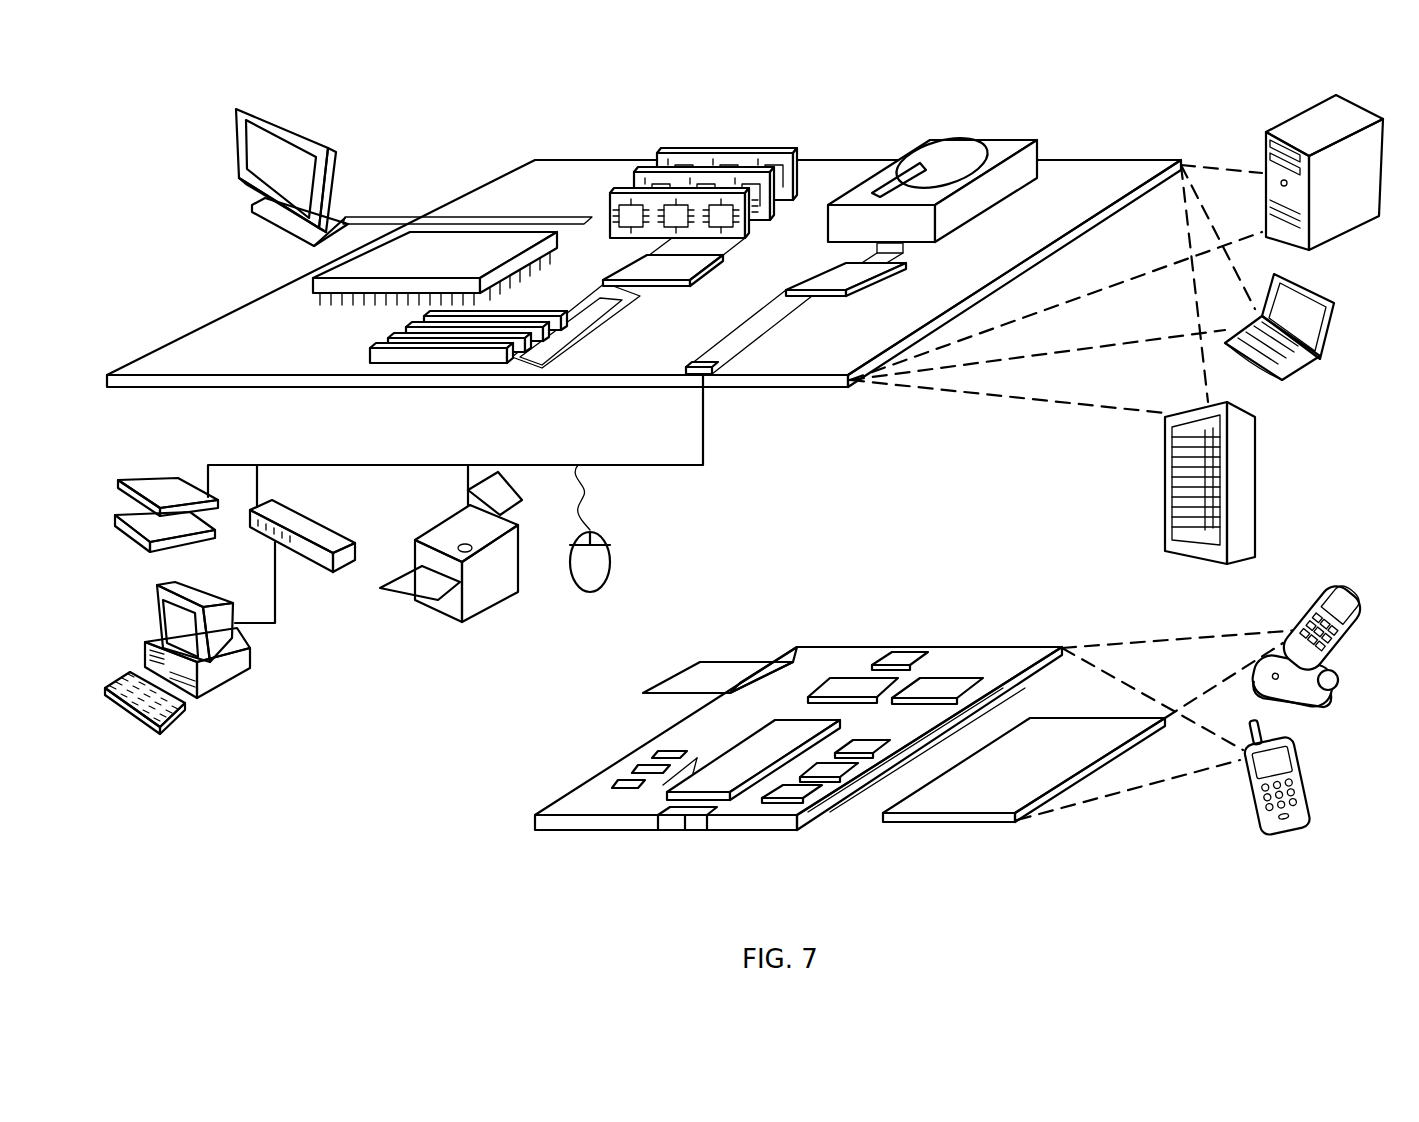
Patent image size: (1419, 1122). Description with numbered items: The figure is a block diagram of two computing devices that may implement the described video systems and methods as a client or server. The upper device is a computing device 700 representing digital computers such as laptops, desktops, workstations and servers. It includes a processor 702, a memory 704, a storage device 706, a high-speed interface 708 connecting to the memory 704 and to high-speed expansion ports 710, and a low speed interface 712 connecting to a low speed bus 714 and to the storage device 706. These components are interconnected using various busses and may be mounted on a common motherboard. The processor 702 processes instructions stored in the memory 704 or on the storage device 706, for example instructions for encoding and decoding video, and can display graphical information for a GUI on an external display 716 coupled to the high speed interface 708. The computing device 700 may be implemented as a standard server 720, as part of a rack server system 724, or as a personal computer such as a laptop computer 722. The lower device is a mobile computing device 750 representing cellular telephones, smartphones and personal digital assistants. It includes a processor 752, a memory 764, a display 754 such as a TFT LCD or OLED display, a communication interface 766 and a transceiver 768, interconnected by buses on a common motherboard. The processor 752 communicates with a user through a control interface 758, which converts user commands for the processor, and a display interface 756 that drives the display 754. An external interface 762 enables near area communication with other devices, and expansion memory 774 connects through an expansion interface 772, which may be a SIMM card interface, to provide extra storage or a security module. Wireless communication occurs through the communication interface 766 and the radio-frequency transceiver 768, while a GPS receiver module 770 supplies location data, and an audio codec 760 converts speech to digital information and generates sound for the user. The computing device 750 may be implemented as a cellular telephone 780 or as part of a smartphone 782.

The computing device 700 is at (452, 125).
The processor 702 is at (322, 280).
The memory 704 is at (668, 155).
The storage device 706 is at (930, 142).
The high-speed interface 708 is at (645, 272).
The high-speed expansion ports 710 is at (392, 347).
The low speed interface 712 is at (826, 272).
The low speed bus 714 is at (713, 373).
The display 716 is at (240, 105).
The standard server 720 is at (1268, 147).
The laptop computer 722 is at (1330, 302).
The rack server system 724 is at (1163, 470).
The computing device 750 is at (512, 824).
The processor 752 is at (722, 785).
The display 754 is at (985, 805).
The display interface 756 is at (800, 790).
The control interface 758 is at (835, 770).
The audio codec 760 is at (862, 748).
The external interface 762 is at (688, 815).
The memory 764 is at (633, 775).
The communication interface 766 is at (855, 686).
The transceiver 768 is at (940, 690).
The GPS receiver module 770 is at (905, 660).
The expansion interface 772 is at (777, 662).
The expansion memory 774 is at (703, 662).
The cellular telephone 780 is at (1312, 605).
The smartphone 782 is at (1252, 790).